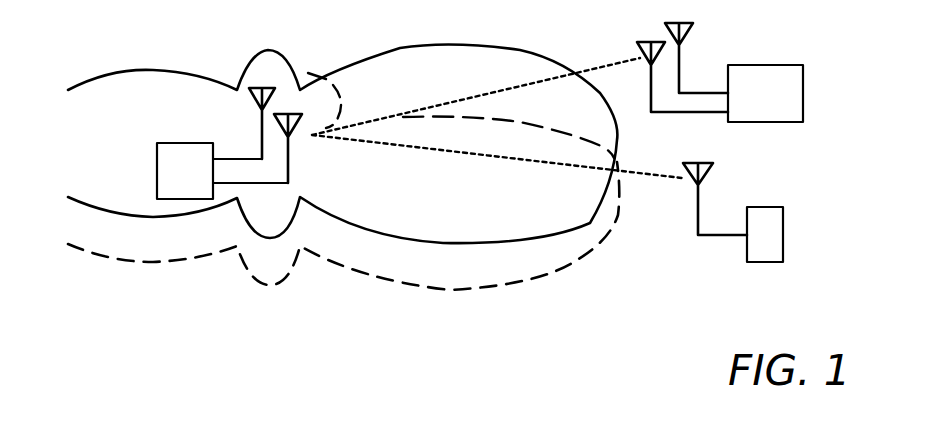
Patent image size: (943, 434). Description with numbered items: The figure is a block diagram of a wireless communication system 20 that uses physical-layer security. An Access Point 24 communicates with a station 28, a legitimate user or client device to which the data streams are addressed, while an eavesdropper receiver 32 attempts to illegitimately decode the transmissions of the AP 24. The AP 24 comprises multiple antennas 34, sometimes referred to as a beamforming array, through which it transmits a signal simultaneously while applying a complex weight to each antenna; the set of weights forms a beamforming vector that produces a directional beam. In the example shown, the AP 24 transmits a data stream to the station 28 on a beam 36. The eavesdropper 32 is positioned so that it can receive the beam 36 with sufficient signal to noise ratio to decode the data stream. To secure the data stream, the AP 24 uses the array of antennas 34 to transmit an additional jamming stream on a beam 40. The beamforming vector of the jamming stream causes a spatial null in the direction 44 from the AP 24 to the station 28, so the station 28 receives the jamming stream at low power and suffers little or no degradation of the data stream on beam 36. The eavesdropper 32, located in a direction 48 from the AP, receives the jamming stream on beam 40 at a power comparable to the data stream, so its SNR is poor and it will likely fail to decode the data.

The communication system 20 is at (133, 46).
The access point 24 is at (157, 172).
The station 28 is at (803, 93).
The eavesdropper receiver 32 is at (783, 233).
The antennas 34 is at (276, 128).
The beam 36 is at (548, 62).
The beam 40 is at (577, 260).
The direction 44 is at (617, 62).
The direction 48 is at (655, 178).